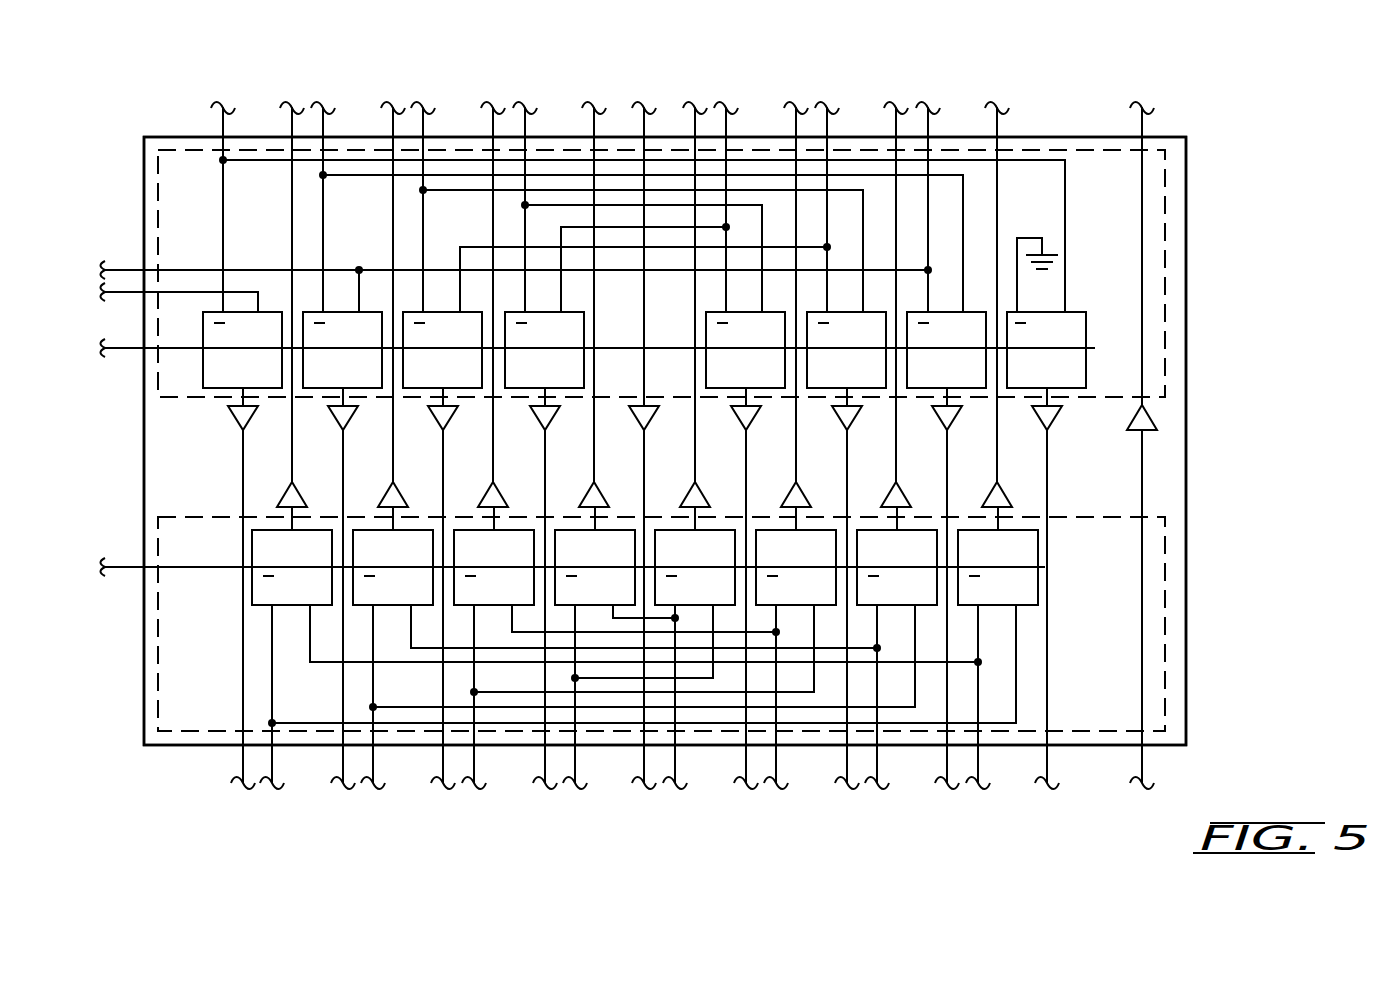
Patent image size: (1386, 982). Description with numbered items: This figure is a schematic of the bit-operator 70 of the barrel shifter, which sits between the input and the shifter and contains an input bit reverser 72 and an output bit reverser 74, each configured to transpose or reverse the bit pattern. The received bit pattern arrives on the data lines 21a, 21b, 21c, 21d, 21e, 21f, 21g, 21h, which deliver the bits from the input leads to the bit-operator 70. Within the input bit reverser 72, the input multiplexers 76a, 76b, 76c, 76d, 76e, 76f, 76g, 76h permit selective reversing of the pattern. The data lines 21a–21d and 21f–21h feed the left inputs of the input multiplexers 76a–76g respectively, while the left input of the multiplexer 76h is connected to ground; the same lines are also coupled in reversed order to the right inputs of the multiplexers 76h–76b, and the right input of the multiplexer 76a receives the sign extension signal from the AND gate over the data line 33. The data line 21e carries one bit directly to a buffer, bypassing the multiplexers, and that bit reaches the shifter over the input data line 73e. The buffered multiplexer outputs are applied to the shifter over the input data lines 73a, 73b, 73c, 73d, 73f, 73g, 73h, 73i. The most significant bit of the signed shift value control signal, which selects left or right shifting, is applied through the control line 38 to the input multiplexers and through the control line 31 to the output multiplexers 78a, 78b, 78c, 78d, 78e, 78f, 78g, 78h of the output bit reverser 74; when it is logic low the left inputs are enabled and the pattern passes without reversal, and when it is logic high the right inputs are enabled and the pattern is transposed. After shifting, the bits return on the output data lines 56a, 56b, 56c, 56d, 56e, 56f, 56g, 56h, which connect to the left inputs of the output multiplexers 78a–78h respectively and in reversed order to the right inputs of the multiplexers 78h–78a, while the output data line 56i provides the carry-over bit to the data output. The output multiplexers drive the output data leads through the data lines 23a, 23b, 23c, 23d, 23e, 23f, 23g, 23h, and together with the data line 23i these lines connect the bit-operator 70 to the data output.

The data line 21a is at (222, 126).
The data line 21b is at (326, 126).
The data line 21c is at (426, 126).
The data line 21d is at (528, 126).
The data line 21e is at (647, 126).
The data line 21f is at (729, 126).
The data line 21g is at (830, 126).
The data line 21h is at (931, 126).
The data line 23a is at (291, 126).
The data line 23b is at (392, 126).
The data line 23c is at (492, 126).
The data line 23d is at (593, 126).
The data line 23e is at (694, 126).
The data line 23f is at (795, 126).
The data line 23g is at (895, 126).
The data line 23h is at (996, 126).
The data line 23i is at (1141, 126).
The data line 33 is at (122, 295).
The control line 38 is at (126, 353).
The control line 31 is at (126, 573).
The bit-operator 70 is at (1187, 250).
The input bit reverser 72 is at (1165, 345).
The output bit reverser 74 is at (1165, 600).
The input multiplexer 76a is at (203, 365).
The input multiplexer 76b is at (338, 312).
The input multiplexer 76c is at (438, 312).
The input multiplexer 76d is at (584, 323).
The input multiplexer 76e is at (668, 423).
The input multiplexer 76f is at (870, 442).
The input multiplexer 76g is at (968, 438).
The input multiplexer 76h is at (1087, 323).
The output multiplexer 78a is at (320, 530).
The output multiplexer 78b is at (421, 530).
The output multiplexer 78c is at (522, 530).
The output multiplexer 78d is at (623, 530).
The output multiplexer 78e is at (723, 530).
The output multiplexer 78f is at (824, 530).
The output multiplexer 78g is at (925, 530).
The output multiplexer 78h is at (1026, 530).
The input data line 73a is at (234, 812).
The input data line 73b is at (334, 812).
The input data line 73c is at (434, 812).
The input data line 73d is at (536, 812).
The input data line 73e is at (635, 812).
The input data line 73f is at (737, 812).
The input data line 73g is at (838, 812).
The input data line 73h is at (938, 812).
The input data line 73i is at (1038, 812).
The output data line 56a is at (281, 832).
The output data line 56b is at (382, 832).
The output data line 56c is at (483, 832).
The output data line 56d is at (584, 832).
The output data line 56e is at (684, 832).
The output data line 56f is at (785, 832).
The output data line 56g is at (886, 832).
The output data line 56h is at (987, 832).
The output data line 56i is at (1133, 812).